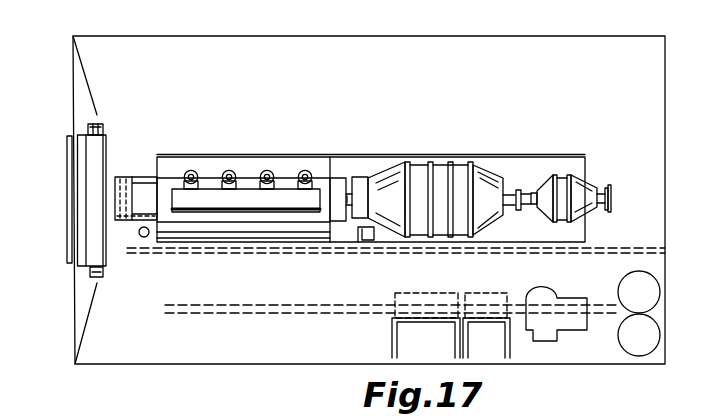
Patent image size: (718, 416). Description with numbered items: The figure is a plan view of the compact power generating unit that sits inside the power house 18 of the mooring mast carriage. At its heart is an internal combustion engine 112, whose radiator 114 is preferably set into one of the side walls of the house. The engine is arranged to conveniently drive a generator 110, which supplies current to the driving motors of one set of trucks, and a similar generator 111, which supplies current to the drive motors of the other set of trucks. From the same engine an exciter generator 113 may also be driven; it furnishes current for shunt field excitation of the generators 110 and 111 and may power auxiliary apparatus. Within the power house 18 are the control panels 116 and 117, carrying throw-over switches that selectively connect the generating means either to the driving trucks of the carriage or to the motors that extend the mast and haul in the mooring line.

The power house 18 is at (366, 36).
The generator 110 is at (455, 178).
The generator 111 is at (418, 175).
The internal combustion engine 112 is at (206, 200).
The exciter generator 113 is at (559, 185).
The radiator 114 is at (78, 208).
The control panel 116 is at (412, 298).
The control panel 117 is at (480, 298).